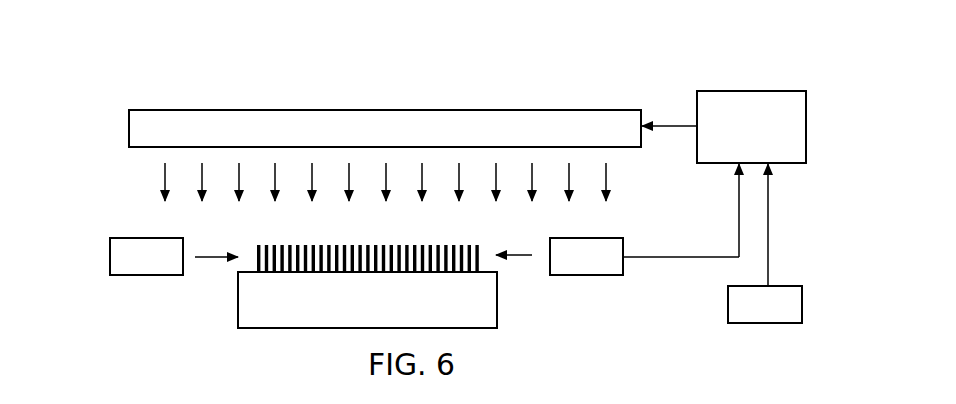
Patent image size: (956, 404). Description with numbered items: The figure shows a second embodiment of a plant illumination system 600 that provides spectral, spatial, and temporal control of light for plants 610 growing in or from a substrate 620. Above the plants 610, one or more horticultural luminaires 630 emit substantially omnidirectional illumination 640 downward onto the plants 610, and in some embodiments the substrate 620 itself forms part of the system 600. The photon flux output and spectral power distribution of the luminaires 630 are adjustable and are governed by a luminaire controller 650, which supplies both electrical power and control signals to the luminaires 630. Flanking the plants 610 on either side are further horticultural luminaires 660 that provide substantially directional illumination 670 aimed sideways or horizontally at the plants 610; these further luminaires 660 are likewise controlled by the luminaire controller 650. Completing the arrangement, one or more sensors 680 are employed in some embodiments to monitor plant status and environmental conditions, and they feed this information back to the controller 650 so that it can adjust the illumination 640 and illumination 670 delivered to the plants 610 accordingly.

The plant illumination system 600 is at (183, 88).
The plants 610 is at (338, 247).
The substrate 620 is at (238, 307).
The horticultural luminaires 630 is at (347, 112).
The omnidirectional illumination 640 is at (607, 173).
The luminaire controller 650 is at (750, 90).
The further horticultural luminaires 660 is at (110, 250).
The directional illumination 670 is at (217, 252).
The sensors 680 is at (779, 285).